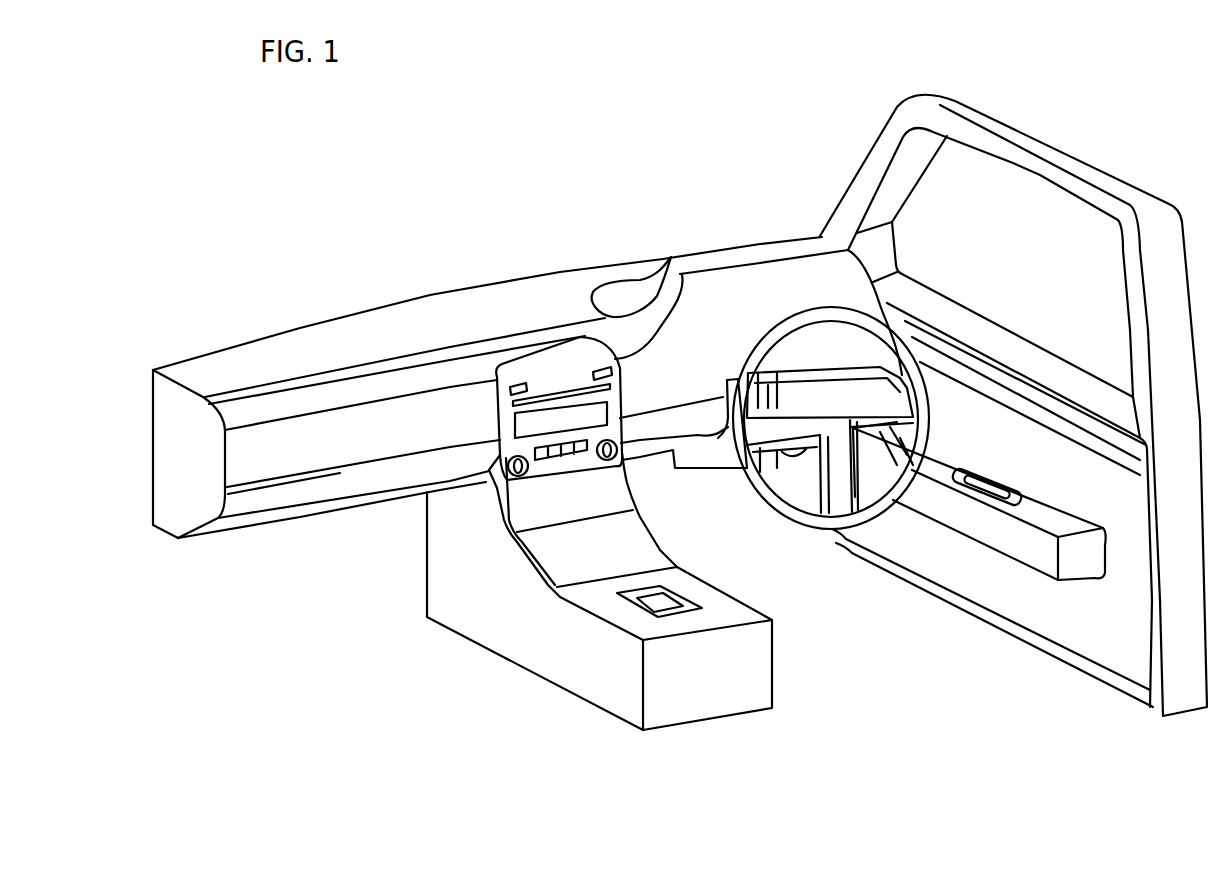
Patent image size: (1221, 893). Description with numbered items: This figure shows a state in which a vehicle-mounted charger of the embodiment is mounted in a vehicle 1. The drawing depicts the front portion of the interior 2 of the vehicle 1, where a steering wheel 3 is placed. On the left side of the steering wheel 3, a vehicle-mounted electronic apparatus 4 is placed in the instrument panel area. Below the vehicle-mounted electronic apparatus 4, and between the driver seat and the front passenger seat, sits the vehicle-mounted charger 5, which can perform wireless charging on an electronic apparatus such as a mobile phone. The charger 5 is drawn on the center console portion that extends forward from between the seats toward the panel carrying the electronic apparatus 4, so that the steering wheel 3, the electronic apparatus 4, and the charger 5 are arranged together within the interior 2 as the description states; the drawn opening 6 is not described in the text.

The vehicle 1 is at (277, 328).
The interior 2 is at (385, 616).
The steering wheel 3 is at (783, 513).
The vehicle-mounted electronic apparatus 4 is at (563, 378).
The vehicle-mounted charger 5 is at (618, 617).
The opening 6 is at (693, 603).